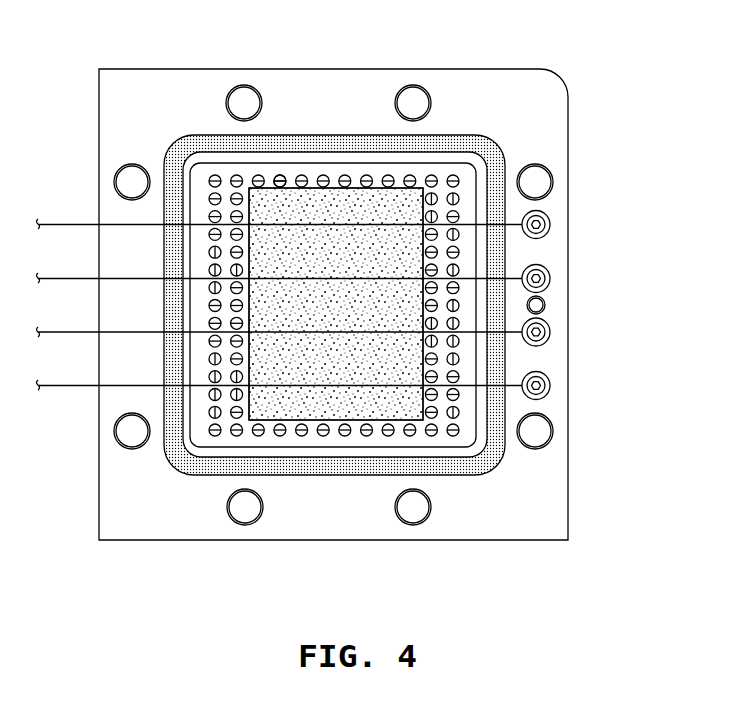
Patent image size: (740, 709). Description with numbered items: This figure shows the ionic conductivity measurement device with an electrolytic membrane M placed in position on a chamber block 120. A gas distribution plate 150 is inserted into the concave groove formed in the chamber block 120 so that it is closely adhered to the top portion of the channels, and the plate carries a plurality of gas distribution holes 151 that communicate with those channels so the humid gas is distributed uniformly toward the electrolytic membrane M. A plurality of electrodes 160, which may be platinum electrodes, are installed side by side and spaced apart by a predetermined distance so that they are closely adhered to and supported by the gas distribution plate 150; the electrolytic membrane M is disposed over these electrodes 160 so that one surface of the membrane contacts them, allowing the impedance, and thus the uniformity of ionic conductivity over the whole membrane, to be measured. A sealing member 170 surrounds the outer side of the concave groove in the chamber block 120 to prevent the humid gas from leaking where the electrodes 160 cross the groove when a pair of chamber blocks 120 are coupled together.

The chamber block 120 is at (530, 112).
The gas distribution plate 150 is at (224, 176).
The gas distribution hole 151 is at (282, 176).
The electrolytic membrane M is at (362, 188).
The electrode 160 is at (527, 197).
The sealing member 170 is at (332, 465).